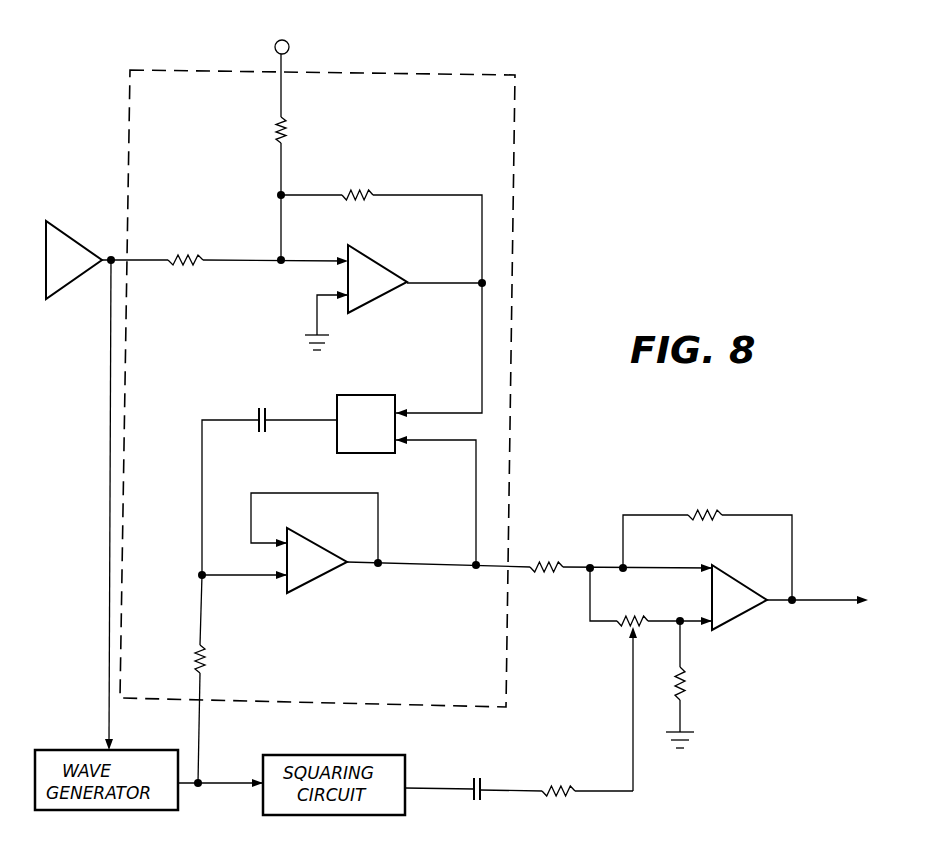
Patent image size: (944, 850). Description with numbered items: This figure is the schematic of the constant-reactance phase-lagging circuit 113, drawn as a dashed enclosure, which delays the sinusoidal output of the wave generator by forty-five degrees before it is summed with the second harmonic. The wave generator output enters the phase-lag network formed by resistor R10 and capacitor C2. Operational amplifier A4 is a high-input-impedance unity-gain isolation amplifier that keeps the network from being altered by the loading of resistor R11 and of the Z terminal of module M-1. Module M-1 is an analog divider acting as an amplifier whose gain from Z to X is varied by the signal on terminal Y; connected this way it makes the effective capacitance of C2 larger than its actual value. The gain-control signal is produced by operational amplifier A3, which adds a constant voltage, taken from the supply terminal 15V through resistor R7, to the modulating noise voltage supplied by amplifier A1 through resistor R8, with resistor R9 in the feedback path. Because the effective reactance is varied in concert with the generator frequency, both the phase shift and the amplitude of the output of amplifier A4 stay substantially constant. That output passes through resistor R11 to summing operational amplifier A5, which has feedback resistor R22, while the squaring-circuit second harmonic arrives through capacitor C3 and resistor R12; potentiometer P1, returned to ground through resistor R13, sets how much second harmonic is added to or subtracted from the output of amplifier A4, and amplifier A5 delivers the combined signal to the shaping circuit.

The phase-lagging circuit 113 is at (522, 225).
The 15 volt supply terminal 15V is at (287, 65).
The resistor R7 is at (303, 188).
The resistor R8 is at (258, 247).
The resistor R9 is at (381, 222).
The resistor R10 is at (221, 681).
The resistor R11 is at (621, 552).
The resistor R12 is at (587, 777).
The resistor R13 is at (698, 684).
The resistor R22 is at (707, 539).
The capacitor C2 is at (269, 475).
The capacitor C3 is at (473, 775).
The potentiometer P1 is at (642, 606).
The amplifier A1 is at (107, 485).
The operational amplifier A3 is at (395, 331).
The operational amplifier A4 is at (364, 543).
The summing operational amplifier A5 is at (790, 615).
The module M-1 is at (406, 468).